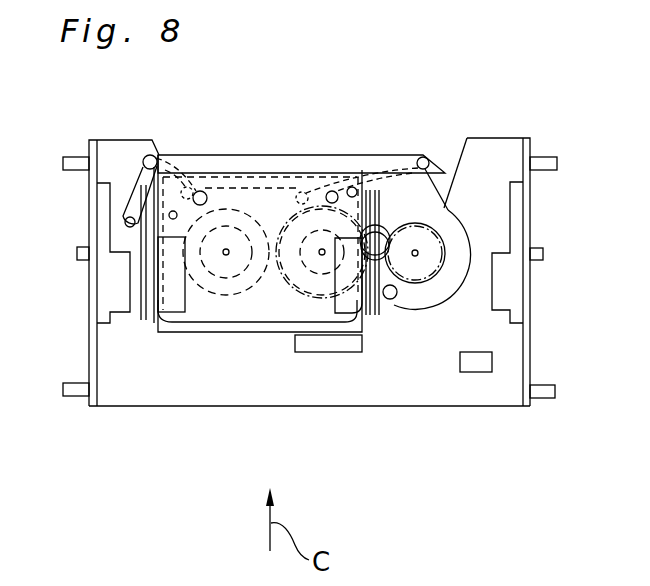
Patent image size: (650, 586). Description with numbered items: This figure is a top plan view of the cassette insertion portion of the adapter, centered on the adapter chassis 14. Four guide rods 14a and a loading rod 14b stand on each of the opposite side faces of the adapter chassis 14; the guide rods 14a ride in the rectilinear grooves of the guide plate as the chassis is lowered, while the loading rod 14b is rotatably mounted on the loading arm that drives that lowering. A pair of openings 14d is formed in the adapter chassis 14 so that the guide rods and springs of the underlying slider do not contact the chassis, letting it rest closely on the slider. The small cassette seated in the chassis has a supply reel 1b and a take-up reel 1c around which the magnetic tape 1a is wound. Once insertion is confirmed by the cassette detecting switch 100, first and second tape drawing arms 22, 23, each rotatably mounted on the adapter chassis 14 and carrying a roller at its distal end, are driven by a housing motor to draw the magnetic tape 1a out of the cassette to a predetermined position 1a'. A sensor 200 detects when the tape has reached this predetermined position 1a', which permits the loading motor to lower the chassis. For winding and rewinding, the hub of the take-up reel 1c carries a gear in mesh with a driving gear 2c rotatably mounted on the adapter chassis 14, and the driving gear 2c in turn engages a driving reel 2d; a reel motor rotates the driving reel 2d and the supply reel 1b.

The adapter chassis 14 is at (495, 157).
The guide rods 14a is at (548, 163).
The loading rod 14b is at (542, 248).
The openings 14d is at (507, 285).
The magnetic tape 1a is at (287, 131).
The predetermined position 1a' is at (301, 118).
The supply reel 1b is at (218, 290).
The take-up reel 1c is at (310, 290).
The driving gear 2c is at (392, 300).
The driving reel 2d is at (423, 263).
The first tape drawing arm 22 is at (137, 173).
The second tape drawing arm 23 is at (444, 208).
The cassette detecting switch 100 is at (302, 343).
The sensor 200 is at (483, 361).